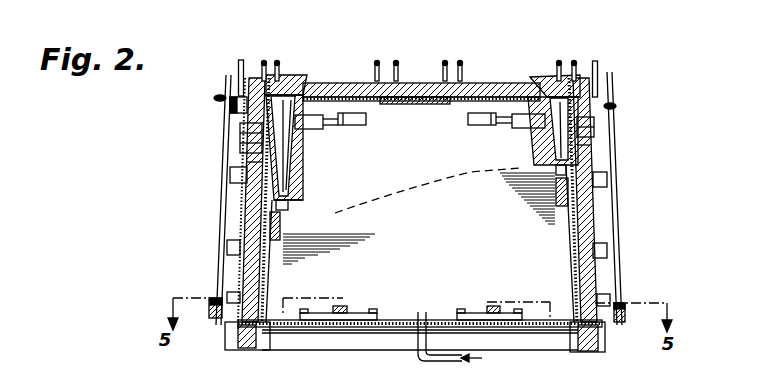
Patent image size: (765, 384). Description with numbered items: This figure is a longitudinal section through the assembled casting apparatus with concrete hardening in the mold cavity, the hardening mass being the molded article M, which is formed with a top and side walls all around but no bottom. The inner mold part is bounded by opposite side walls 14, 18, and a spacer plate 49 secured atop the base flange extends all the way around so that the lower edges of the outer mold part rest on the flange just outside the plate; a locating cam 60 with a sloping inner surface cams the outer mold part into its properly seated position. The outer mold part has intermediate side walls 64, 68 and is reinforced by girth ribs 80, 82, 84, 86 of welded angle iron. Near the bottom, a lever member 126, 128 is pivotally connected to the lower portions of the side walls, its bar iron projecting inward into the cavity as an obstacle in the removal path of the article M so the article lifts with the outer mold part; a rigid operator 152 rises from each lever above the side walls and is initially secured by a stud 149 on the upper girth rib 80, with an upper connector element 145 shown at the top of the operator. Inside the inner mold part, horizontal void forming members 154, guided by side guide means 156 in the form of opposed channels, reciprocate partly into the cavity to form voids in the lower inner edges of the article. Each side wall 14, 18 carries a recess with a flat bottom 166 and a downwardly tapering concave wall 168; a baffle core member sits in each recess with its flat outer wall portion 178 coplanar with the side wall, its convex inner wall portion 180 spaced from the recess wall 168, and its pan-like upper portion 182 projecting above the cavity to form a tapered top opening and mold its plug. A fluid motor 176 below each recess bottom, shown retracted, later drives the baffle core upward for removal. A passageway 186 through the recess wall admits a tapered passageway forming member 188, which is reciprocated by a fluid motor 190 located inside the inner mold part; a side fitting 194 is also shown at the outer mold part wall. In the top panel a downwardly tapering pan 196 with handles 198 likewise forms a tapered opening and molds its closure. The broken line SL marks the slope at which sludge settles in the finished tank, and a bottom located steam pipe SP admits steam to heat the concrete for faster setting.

The side wall 14 is at (281, 268).
The side wall 18 is at (577, 245).
The spacer plate 49 is at (250, 322).
The locating cam 60 is at (242, 338).
The intermediate side wall 64 is at (250, 197).
The intermediate side wall 68 is at (590, 207).
The girth rib 80 is at (222, 96).
The girth rib 82 is at (230, 175).
The girth rib 84 is at (228, 247).
The girth rib 86 is at (228, 295).
The lever member 126 is at (208, 320).
The lever member 128 is at (630, 322).
The guide post 145 is at (242, 60).
The stud 149 is at (232, 105).
The operator 152 is at (215, 219).
The void forming member 154 is at (362, 327).
The side guide means 156 is at (380, 312).
The recess bottom 166 is at (290, 204).
The concave side wall 168 is at (310, 180).
The fluid motor 176 is at (285, 222).
The flat outer wall portion 178 is at (246, 166).
The convex inner wall portion 180 is at (284, 158).
The pan-like upper portion 182 is at (303, 78).
The passageway 186 is at (317, 130).
The passageway forming member 188 is at (320, 92).
The supply connector 190 is at (366, 124).
The side fitting 194 is at (242, 135).
The pan 196 is at (405, 104).
The handles 198 is at (373, 77).
The sludge slope line SL is at (427, 185).
The steam pipe SP is at (424, 359).
The molded article M is at (583, 230).